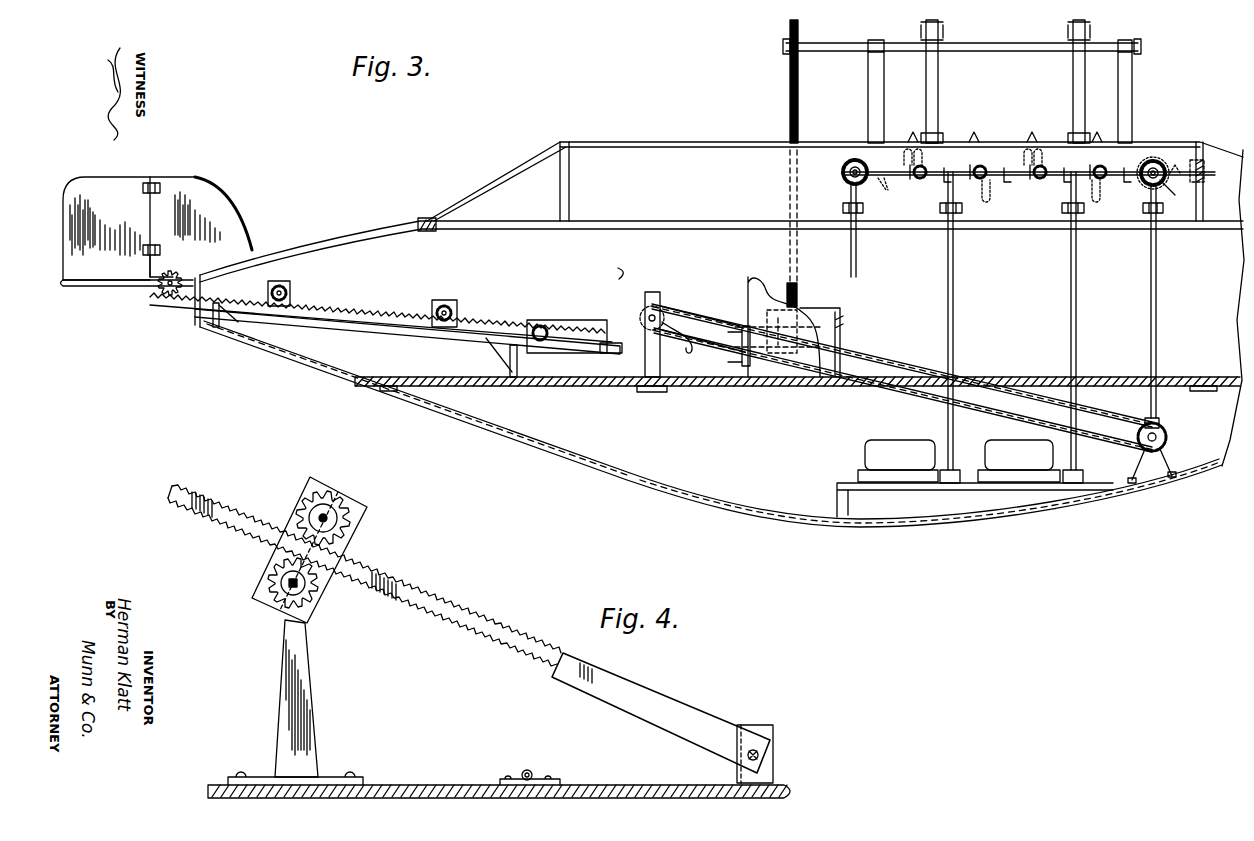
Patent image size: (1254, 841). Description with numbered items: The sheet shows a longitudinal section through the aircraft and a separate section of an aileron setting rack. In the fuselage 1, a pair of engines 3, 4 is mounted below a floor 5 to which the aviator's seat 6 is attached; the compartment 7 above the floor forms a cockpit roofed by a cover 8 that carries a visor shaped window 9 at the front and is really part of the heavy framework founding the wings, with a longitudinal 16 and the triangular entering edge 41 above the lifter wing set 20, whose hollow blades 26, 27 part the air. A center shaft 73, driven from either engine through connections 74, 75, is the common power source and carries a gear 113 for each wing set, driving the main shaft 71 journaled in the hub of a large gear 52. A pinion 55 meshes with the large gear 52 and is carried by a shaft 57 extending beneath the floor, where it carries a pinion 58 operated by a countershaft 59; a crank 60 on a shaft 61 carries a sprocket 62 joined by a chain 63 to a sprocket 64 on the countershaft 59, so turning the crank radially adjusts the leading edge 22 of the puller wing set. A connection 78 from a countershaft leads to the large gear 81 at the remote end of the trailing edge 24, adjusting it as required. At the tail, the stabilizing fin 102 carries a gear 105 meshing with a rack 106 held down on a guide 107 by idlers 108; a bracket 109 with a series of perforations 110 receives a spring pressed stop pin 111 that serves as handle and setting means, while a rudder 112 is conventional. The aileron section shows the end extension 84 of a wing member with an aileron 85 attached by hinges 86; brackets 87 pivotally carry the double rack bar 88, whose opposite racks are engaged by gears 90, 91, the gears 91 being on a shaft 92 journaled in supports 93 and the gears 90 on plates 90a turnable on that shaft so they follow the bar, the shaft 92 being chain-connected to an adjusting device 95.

In FIG. 3, the fuselage 1 is at (1138, 492).
In FIG. 3, the engine 3 is at (985, 443).
In FIG. 3, the engine 4 is at (872, 442).
In FIG. 3, the floor 5 is at (728, 386).
In FIG. 3, the aviator's seat 6 is at (752, 280).
In FIG. 3, the compartment 7 is at (615, 263).
In FIG. 3, the cover 8 is at (723, 143).
In FIG. 3, the visor shaped window 9 is at (1216, 177).
In FIG. 3, the longitudinal 16 is at (860, 139).
In FIG. 3, the lifter wing set 20 is at (940, 158).
In FIG. 3, the leading edge 22 is at (1185, 162).
In FIG. 3, the trailing edge 24 is at (882, 180).
In FIG. 3, the blade 26 is at (990, 200).
In FIG. 3, the blade 27 is at (962, 210).
In FIG. 3, the triangular entering edge 41 is at (917, 128).
In FIG. 3, the large gear 52 is at (1144, 178).
In FIG. 3, the pinion 55 is at (1150, 192).
In FIG. 3, the shaft 57 is at (1151, 275).
In FIG. 3, the pinion 58 is at (1160, 425).
In FIG. 3, the countershaft 59 is at (1167, 438).
In FIG. 3, the crank 60 is at (690, 349).
In FIG. 3, the shaft 61 is at (648, 315).
In FIG. 3, the sprocket 62 is at (672, 318).
In FIG. 3, the chain 63 is at (722, 313).
In FIG. 3, the sprocket 64 is at (1141, 430).
In FIG. 3, the main shaft 71 is at (1176, 198).
In FIG. 3, the center shaft 73 is at (1010, 180).
In FIG. 3, the connection 74 is at (1071, 271).
In FIG. 3, the connection 75 is at (948, 267).
In FIG. 3, the connection 78 is at (851, 251).
In FIG. 3, the large gear 81 is at (841, 173).
In FIG. 3, the adjusting device 95 is at (665, 283).
In FIG. 3, the fin 102 is at (92, 286).
In FIG. 3, the gear 105 is at (167, 268).
In FIG. 3, the rack 106 is at (346, 309).
In FIG. 3, the guide 107 is at (362, 322).
In FIG. 3, the idler 108 is at (282, 290).
In FIG. 3, the bracket 109 is at (582, 322).
In FIG. 3, the perforation 110 is at (537, 326).
In FIG. 3, the spring pressed stop pin 111 is at (596, 350).
In FIG. 3, the rudder 112 is at (98, 190).
In FIG. 3, the gear 113 is at (1158, 160).
In FIG. 4, the end extension 84 is at (425, 790).
In FIG. 4, the aileron 85 is at (625, 790).
In FIG. 4, the hinge 86 is at (528, 771).
In FIG. 4, the bracket 87 is at (765, 733).
In FIG. 4, the double rack bar 88 is at (615, 678).
In FIG. 4, the gear 90 is at (334, 498).
In FIG. 4, the plate 90a is at (358, 501).
In FIG. 4, the gear 91 is at (268, 573).
In FIG. 4, the shaft 92 is at (288, 587).
In FIG. 4, the support 93 is at (290, 687).